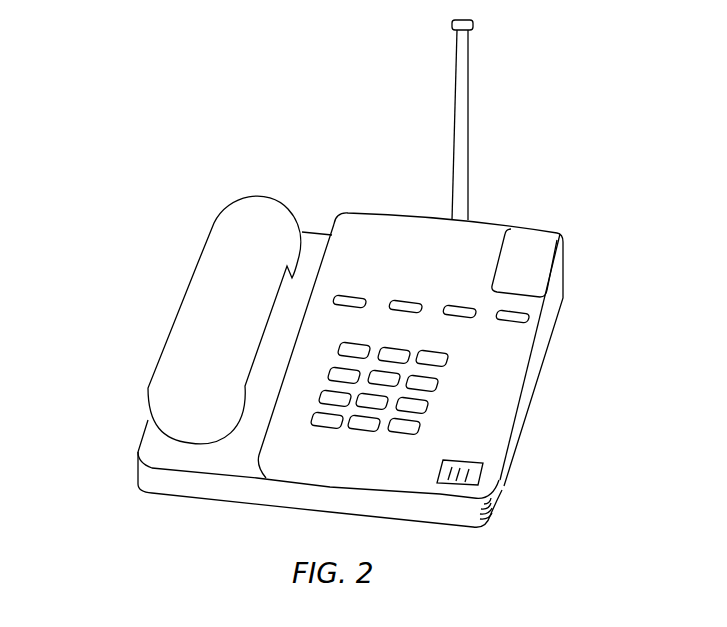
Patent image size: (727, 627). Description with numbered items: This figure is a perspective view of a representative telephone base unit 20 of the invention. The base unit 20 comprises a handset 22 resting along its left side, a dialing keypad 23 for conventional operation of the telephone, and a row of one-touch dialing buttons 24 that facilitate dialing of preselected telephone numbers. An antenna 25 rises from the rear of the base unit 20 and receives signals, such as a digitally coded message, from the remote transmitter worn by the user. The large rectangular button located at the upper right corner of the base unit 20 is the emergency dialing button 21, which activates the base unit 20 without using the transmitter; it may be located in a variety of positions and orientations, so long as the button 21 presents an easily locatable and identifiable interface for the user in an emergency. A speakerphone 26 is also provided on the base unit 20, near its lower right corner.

The telephone base unit 20 is at (122, 285).
The emergency dialing button 21 is at (548, 238).
The handset 22 is at (197, 265).
The dialing keypad 23 is at (438, 393).
The one-touch dialing buttons 24 is at (532, 318).
The antenna 25 is at (468, 91).
The speakerphone 26 is at (483, 476).